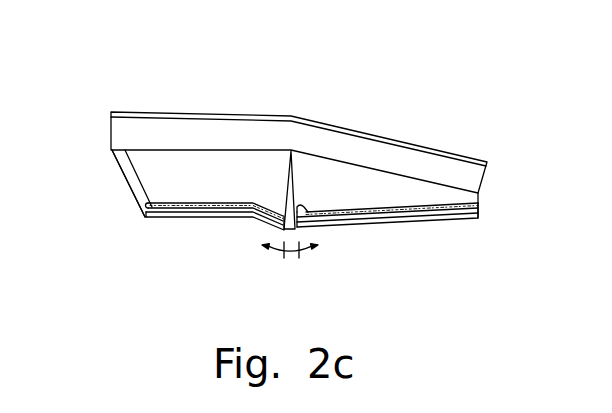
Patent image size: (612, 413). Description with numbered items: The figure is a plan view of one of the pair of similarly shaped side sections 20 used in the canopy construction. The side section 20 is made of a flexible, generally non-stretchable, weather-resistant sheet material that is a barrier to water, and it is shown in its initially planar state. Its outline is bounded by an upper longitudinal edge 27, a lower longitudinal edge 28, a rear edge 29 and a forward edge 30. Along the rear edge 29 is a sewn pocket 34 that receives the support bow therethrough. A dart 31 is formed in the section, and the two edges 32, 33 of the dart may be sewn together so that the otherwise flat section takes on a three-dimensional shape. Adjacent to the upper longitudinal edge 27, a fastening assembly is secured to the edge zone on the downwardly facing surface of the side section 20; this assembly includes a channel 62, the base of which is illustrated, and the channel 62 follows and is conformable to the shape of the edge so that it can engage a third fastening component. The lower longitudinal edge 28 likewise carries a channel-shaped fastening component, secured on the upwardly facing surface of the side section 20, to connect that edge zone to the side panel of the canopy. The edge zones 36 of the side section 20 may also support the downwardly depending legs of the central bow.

The side section 20 is at (115, 181).
The upper longitudinal edge 27 is at (381, 137).
The lower longitudinal edge 28 is at (226, 217).
The rear edge 29 is at (114, 157).
The forward edge 30 is at (479, 197).
The dart 31 is at (293, 260).
The dart edge 32 is at (287, 201).
The dart edge 33 is at (314, 214).
The sewn pocket 34 is at (142, 190).
The edge zone 36 is at (182, 213).
The channel 62 is at (173, 100).